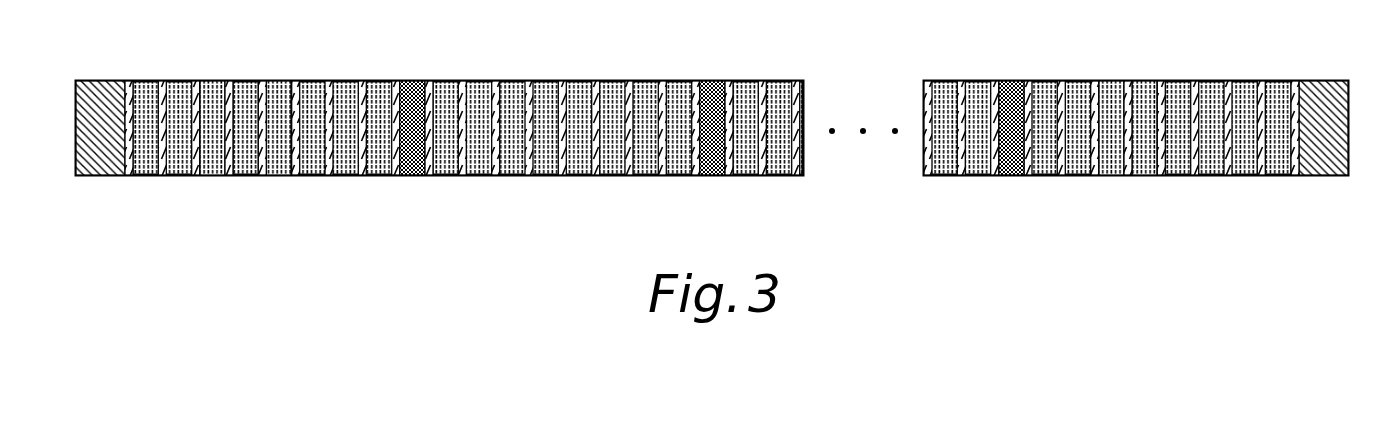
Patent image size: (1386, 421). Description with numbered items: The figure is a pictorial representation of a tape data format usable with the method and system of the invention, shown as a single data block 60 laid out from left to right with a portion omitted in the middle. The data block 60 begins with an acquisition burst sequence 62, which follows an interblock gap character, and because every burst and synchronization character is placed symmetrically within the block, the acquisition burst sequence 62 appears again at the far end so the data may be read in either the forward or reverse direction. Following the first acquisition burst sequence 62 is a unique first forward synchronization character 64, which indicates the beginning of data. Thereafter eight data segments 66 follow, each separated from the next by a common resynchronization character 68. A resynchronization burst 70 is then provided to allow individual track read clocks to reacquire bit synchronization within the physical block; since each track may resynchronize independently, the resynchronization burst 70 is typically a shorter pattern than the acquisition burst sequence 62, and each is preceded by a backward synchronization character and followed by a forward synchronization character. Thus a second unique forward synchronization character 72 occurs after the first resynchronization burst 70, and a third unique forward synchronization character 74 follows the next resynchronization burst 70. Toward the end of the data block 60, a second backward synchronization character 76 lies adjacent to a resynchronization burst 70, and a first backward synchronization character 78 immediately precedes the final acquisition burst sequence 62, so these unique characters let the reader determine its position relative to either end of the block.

The data block 60 is at (117, 184).
The acquisition burst sequence 62 is at (116, 81).
The forward synchronization character FSC1 64 is at (130, 175).
The data segments 66 is at (283, 81).
The resynchronization character 68 is at (245, 175).
The resynchronization burst 70 is at (420, 81).
The Forward Synchronization Character 2 (FSC2) 72 is at (427, 175).
The Forward Synchronization Character 3 (FSC3) 74 is at (729, 81).
The Backward Synchronization Character 2 (BSC2) 76 is at (997, 175).
The Backward Synchronization Character 1 (BSC1) 78 is at (1293, 81).